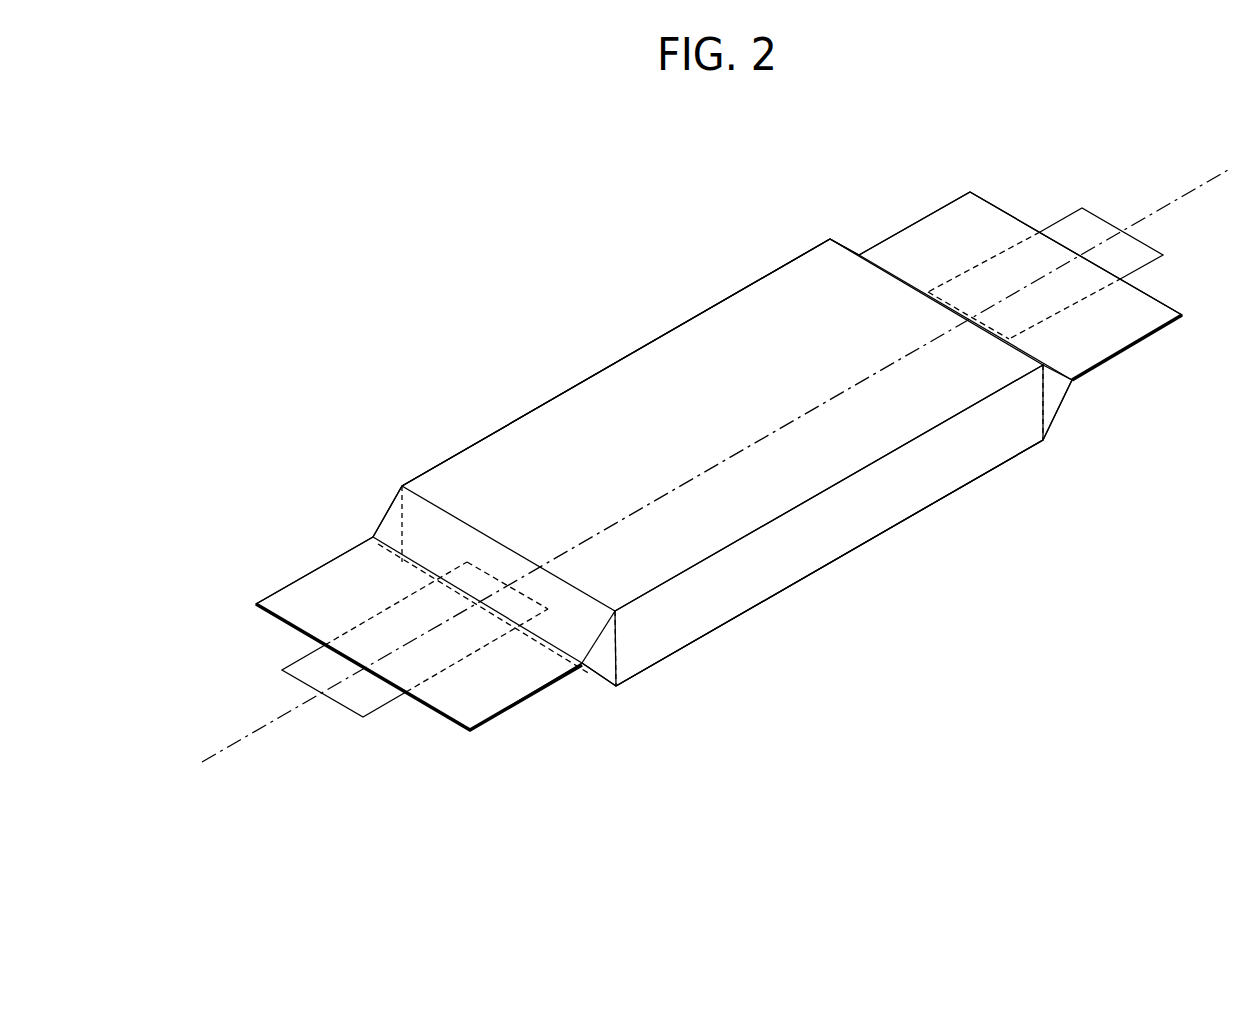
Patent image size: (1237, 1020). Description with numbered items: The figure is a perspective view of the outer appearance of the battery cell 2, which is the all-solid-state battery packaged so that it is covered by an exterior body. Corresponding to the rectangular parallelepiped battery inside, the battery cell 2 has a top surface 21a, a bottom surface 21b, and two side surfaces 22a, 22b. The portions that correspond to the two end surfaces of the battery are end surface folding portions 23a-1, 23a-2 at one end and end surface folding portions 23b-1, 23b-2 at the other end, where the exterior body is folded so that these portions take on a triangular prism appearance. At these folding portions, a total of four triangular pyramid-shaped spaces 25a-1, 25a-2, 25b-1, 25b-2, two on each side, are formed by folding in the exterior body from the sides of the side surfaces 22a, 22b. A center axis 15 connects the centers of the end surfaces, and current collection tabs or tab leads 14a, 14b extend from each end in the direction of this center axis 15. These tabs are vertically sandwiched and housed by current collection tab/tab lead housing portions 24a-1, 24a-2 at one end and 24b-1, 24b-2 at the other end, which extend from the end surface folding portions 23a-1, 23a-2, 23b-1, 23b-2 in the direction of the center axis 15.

The battery cell 2 is at (492, 175).
The current collection tab/current collection tab lead 14a is at (303, 663).
The current collection tab/current collection tab lead 14b is at (1090, 223).
The center axis 15 is at (220, 753).
The top surface 21a is at (702, 368).
The bottom surface 21b is at (783, 593).
The side surface 22a is at (505, 422).
The side surface 22b is at (848, 510).
The end surface folding portion 23a-1 is at (428, 530).
The end surface folding portion 23a-2 is at (590, 680).
The end surface folding portion 23b-1 is at (898, 268).
The end surface folding portion 23b-2 is at (1068, 402).
The current collection tab/current collection tab lead housing portion 24a-1 is at (297, 610).
The current collection tab/current collection tab lead housing portion 24a-2 is at (483, 732).
The current collection tab/current collection tab lead housing portion 24b-1 is at (985, 233).
The current collection tab/current collection tab lead housing portion 24b-2 is at (1163, 340).
The triangular pyramid-shaped space 25a-1 is at (387, 505).
The triangular pyramid-shaped space 25a-2 is at (605, 657).
The triangular pyramid-shaped space 25b-1 is at (822, 240).
The triangular pyramid-shaped space 25b-2 is at (1048, 405).